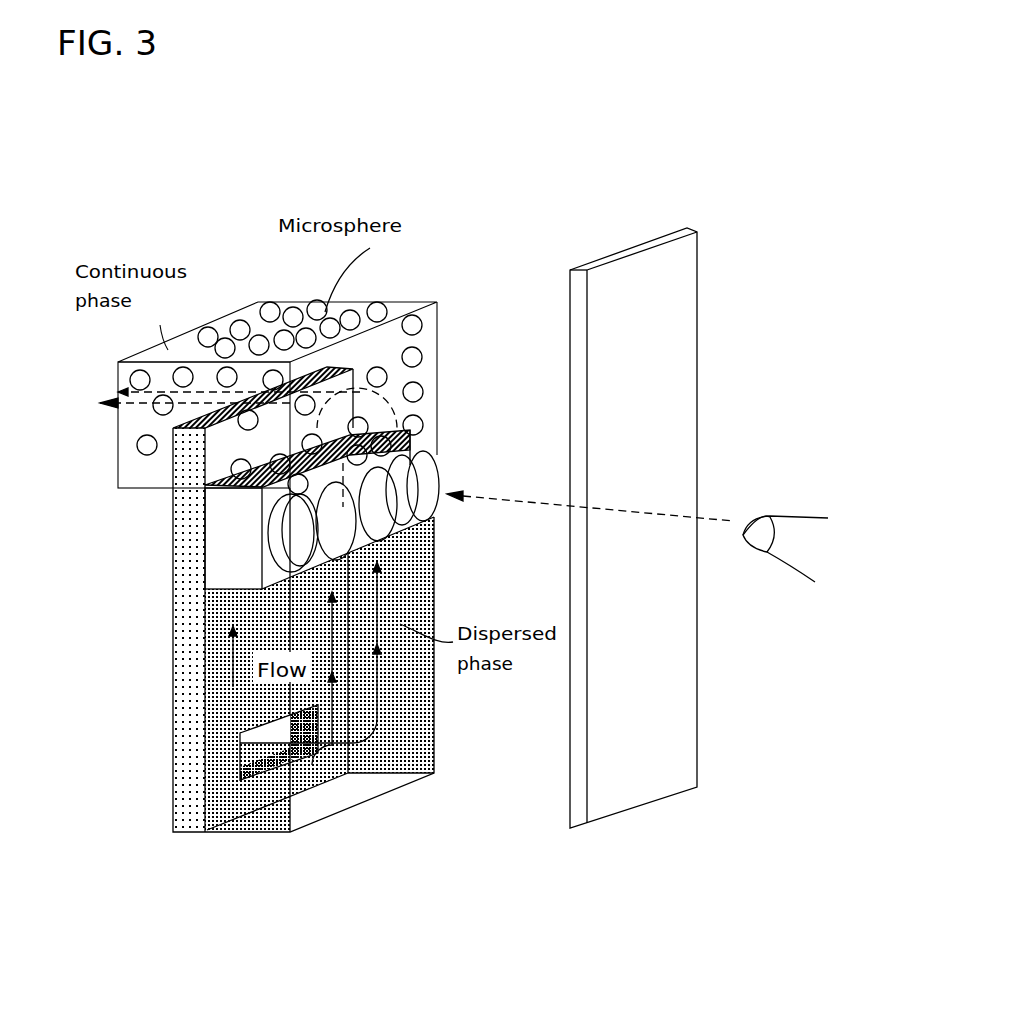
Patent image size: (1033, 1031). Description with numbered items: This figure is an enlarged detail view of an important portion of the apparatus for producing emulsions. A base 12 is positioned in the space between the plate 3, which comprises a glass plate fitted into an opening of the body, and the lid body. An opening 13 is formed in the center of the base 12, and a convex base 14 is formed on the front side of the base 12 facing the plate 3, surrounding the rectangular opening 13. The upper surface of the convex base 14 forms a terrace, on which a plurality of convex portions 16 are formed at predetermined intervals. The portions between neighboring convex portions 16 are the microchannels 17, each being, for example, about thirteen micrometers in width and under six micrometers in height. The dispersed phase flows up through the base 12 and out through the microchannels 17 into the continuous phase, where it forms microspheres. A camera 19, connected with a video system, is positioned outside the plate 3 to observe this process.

The plate 3 is at (612, 745).
The base 12 is at (183, 813).
The opening 13 is at (280, 770).
The convex base 14 is at (217, 542).
The convex portion 16 is at (433, 457).
The microchannel 17 is at (435, 518).
The camera 19 is at (803, 527).